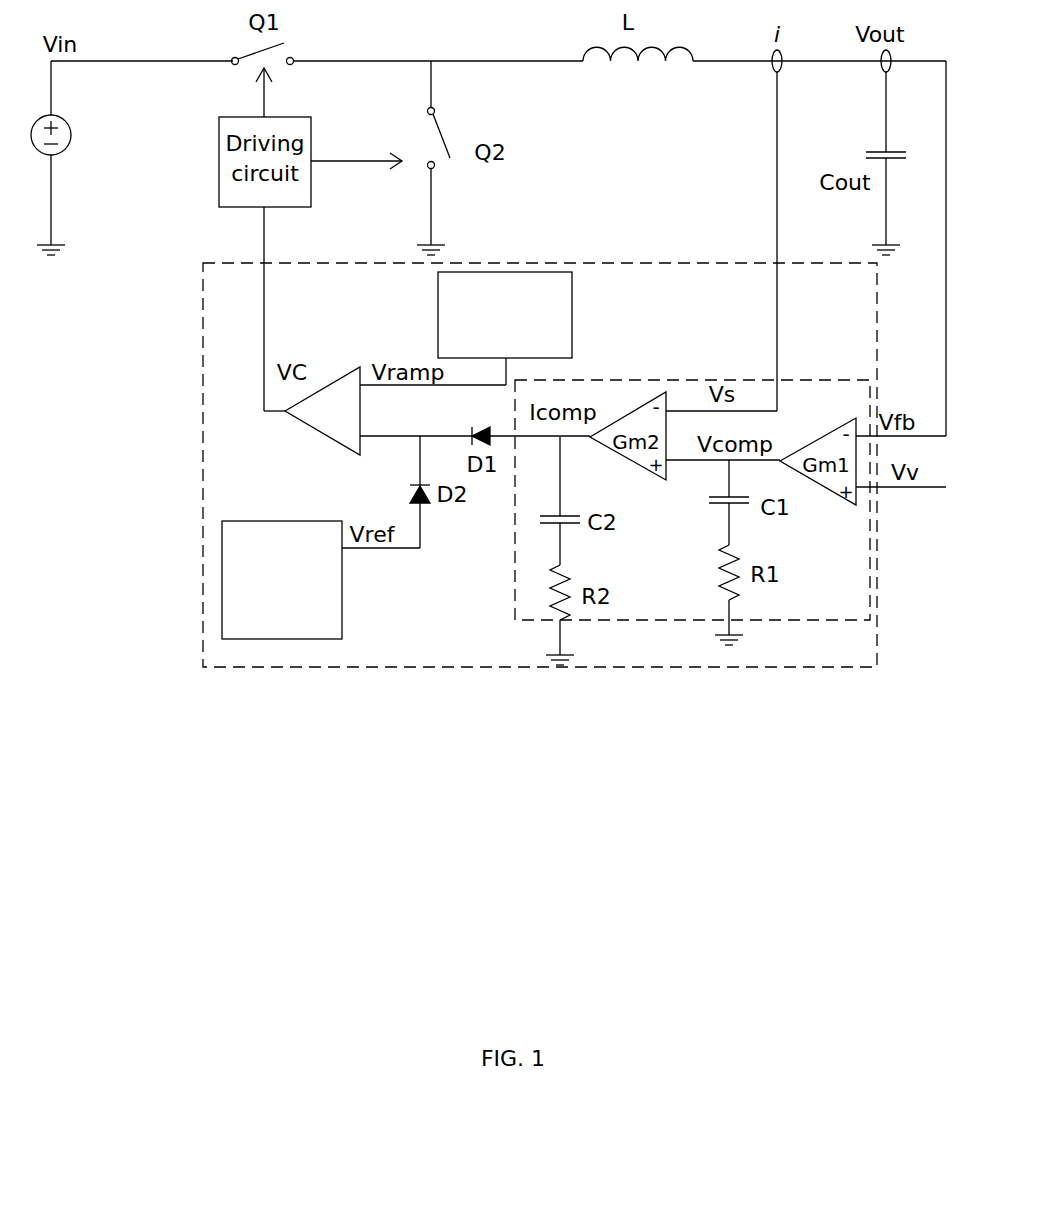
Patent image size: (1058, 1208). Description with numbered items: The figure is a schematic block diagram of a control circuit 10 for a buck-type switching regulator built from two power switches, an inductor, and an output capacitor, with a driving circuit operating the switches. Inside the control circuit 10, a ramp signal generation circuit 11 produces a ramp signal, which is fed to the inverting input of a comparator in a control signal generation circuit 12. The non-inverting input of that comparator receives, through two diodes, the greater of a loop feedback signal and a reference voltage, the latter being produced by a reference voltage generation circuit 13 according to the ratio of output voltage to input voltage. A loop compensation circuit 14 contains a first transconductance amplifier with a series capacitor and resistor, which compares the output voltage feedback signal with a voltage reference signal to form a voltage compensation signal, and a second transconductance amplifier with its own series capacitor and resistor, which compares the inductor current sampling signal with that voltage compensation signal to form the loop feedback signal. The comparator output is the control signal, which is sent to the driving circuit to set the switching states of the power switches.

The control circuit 10 is at (877, 563).
The ramp signal generation circuit 11 is at (572, 308).
The control signal generation circuit 12 is at (310, 432).
The reference voltage generation circuit 13 is at (342, 576).
The loop compensation circuit 14 is at (777, 621).